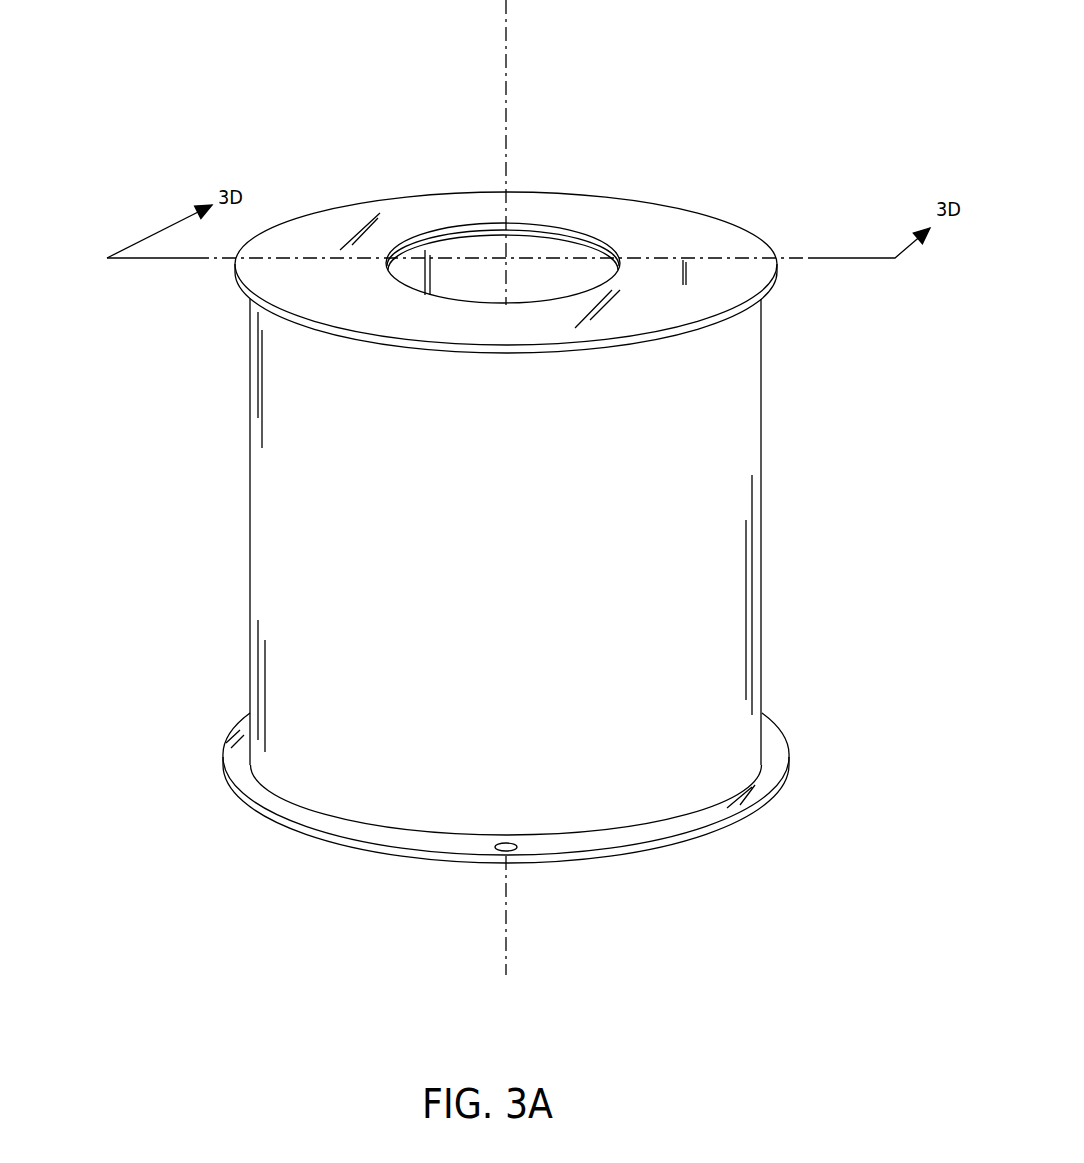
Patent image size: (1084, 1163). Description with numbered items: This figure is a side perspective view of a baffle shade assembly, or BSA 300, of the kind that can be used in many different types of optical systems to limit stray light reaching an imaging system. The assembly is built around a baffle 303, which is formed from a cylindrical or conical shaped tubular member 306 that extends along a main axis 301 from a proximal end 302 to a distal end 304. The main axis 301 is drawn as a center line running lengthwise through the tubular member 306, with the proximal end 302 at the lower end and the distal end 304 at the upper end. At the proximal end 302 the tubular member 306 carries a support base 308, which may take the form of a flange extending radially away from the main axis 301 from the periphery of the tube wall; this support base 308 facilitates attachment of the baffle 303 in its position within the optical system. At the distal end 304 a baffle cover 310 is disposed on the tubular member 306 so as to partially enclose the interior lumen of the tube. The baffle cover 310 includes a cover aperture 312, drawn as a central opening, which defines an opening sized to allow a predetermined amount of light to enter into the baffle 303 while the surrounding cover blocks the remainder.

The BSA 300 is at (815, 100).
The main axis 301 is at (505, 95).
The proximal end 302 is at (850, 740).
The baffle 303 is at (152, 381).
The distal end 304 is at (783, 298).
The tubular member 306 is at (280, 586).
The support base 308 is at (242, 782).
The baffle cover 310 is at (421, 207).
The cover aperture 312 is at (497, 303).